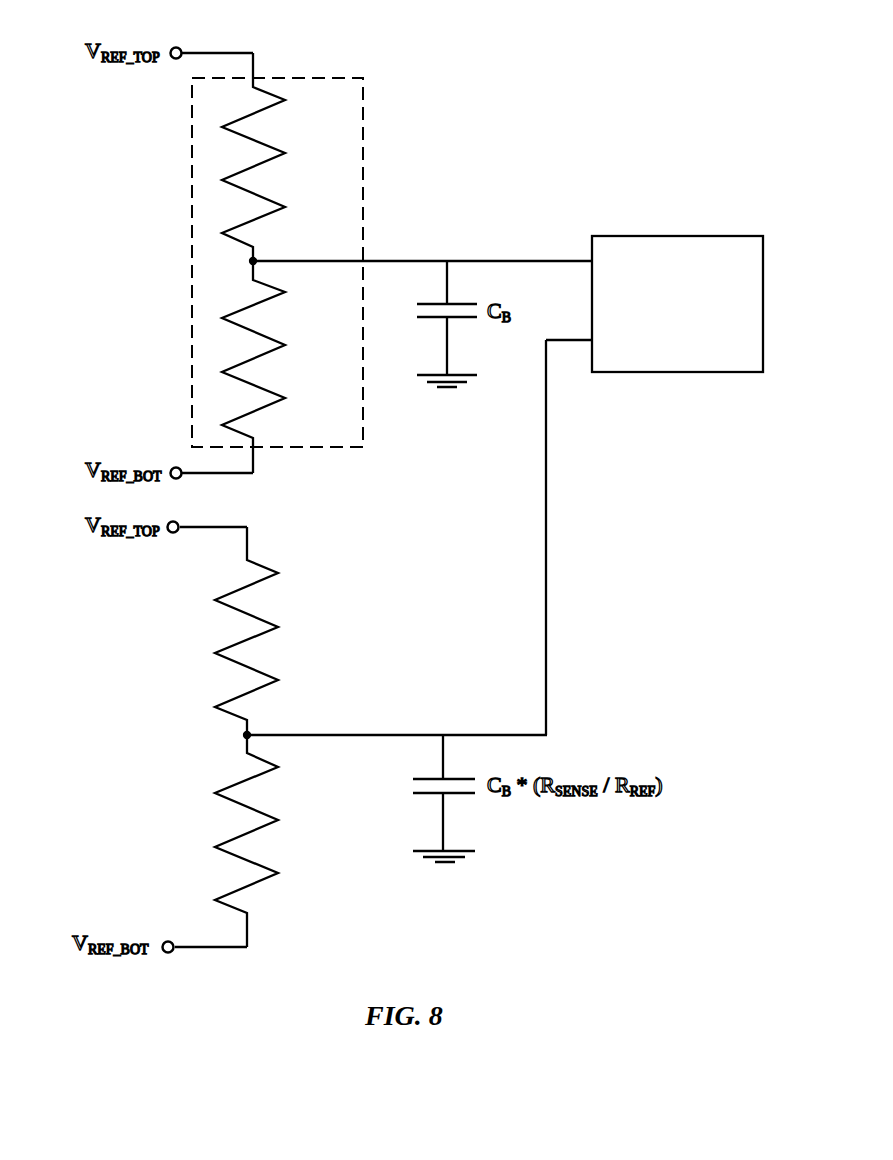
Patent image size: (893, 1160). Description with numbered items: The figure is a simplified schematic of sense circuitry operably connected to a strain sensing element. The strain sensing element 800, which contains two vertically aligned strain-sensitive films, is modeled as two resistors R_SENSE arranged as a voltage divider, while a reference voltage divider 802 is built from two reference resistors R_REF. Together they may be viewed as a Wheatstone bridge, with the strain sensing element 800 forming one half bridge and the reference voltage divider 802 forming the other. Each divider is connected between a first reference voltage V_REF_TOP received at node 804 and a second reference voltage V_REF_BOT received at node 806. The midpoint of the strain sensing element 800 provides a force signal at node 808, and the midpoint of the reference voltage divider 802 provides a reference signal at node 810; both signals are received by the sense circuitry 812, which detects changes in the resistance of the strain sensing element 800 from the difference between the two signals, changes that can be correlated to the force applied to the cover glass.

The strain sensing element 800 is at (192, 272).
The reference voltage divider 802 is at (96, 588).
The node 804 is at (176, 46).
The node 806 is at (174, 466).
The node 808 is at (290, 250).
The node 810 is at (272, 726).
The sense circuitry 812 is at (689, 236).